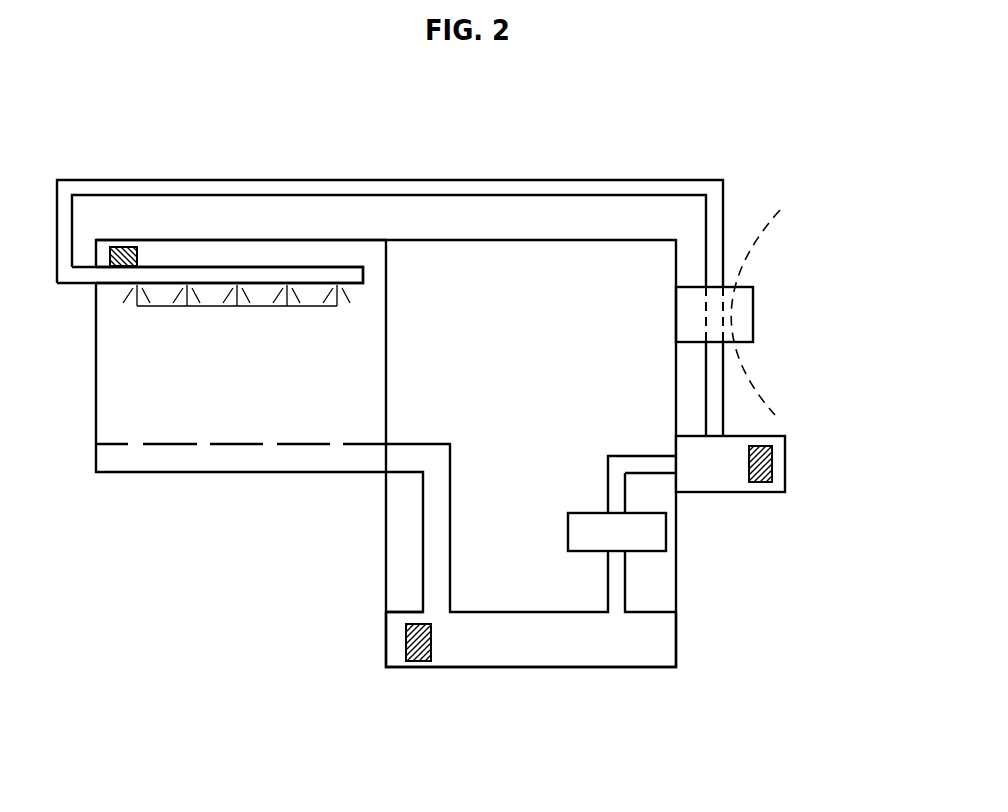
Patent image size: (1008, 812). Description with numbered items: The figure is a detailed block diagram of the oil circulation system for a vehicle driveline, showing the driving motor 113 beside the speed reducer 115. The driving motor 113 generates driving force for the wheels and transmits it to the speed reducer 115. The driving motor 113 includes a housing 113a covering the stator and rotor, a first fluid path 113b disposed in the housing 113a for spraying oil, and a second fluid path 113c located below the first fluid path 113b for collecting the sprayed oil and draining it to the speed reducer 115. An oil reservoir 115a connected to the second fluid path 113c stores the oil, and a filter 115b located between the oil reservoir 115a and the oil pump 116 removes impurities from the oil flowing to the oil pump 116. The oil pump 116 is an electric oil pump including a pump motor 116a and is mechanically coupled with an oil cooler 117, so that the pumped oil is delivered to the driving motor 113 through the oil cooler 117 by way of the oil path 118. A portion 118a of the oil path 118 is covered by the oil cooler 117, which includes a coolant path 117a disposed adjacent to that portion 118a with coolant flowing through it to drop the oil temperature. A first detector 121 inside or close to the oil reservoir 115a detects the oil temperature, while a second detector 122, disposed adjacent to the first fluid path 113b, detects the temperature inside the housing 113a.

The driving motor 113 is at (180, 506).
The housing 113a is at (240, 240).
The first fluid path 113b is at (302, 267).
The second fluid path 113c is at (241, 443).
The speed reducer 115 is at (531, 240).
The oil reservoir 115a is at (665, 642).
The filter 115b is at (667, 525).
The oil pump 116 is at (787, 462).
The pump motor 116a is at (773, 450).
The oil cooler 117 is at (756, 312).
The coolant path 117a is at (732, 305).
The oil path 118 is at (531, 178).
The portion of the oil path 118a is at (703, 303).
The first detector 121 is at (417, 662).
The second detector 122 is at (122, 247).